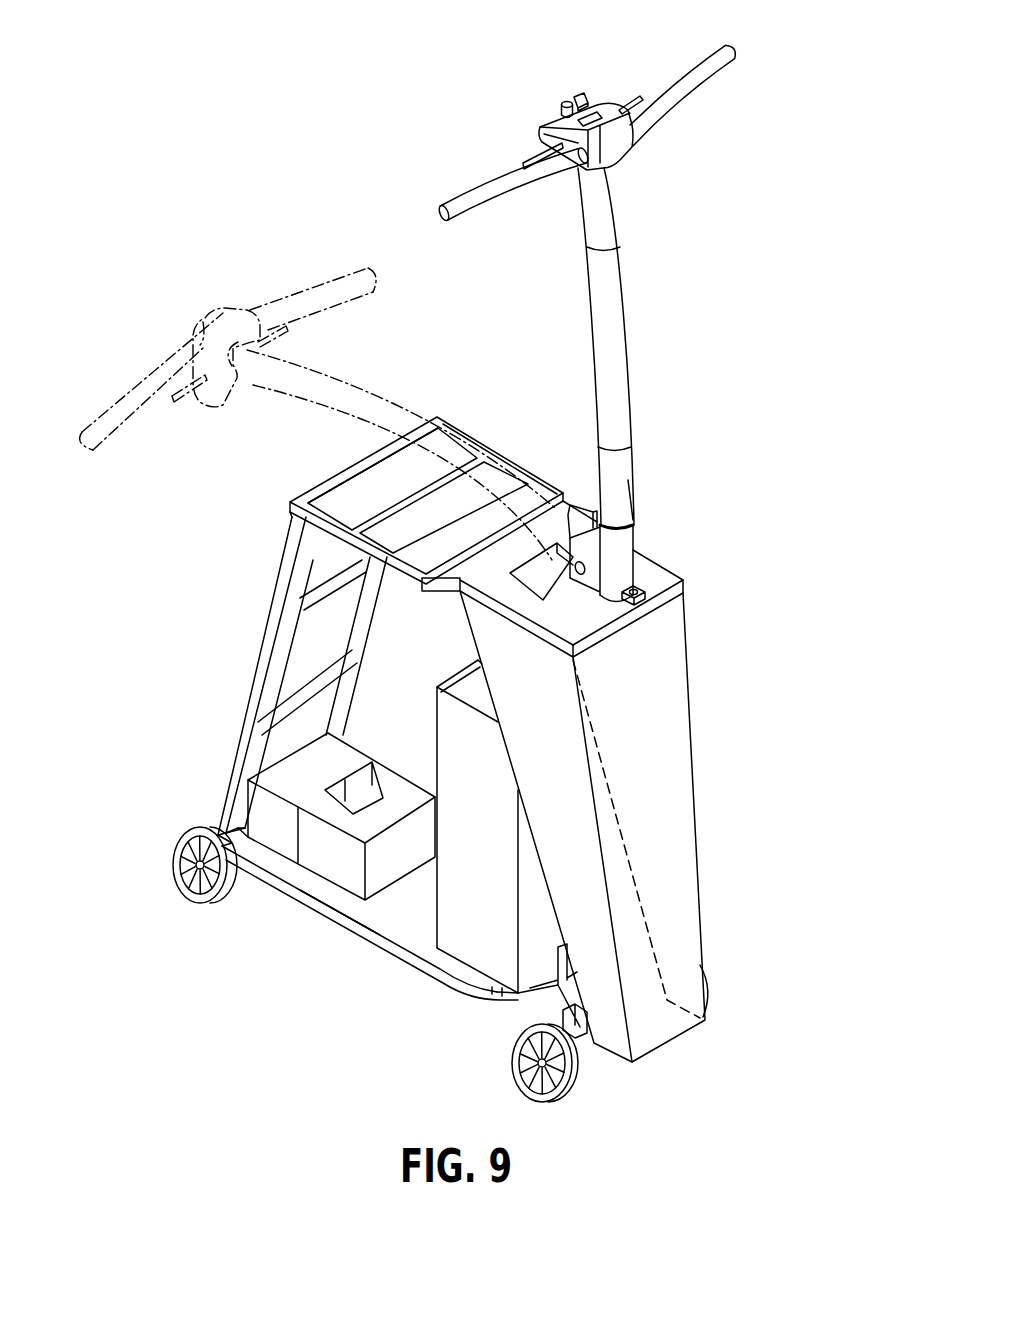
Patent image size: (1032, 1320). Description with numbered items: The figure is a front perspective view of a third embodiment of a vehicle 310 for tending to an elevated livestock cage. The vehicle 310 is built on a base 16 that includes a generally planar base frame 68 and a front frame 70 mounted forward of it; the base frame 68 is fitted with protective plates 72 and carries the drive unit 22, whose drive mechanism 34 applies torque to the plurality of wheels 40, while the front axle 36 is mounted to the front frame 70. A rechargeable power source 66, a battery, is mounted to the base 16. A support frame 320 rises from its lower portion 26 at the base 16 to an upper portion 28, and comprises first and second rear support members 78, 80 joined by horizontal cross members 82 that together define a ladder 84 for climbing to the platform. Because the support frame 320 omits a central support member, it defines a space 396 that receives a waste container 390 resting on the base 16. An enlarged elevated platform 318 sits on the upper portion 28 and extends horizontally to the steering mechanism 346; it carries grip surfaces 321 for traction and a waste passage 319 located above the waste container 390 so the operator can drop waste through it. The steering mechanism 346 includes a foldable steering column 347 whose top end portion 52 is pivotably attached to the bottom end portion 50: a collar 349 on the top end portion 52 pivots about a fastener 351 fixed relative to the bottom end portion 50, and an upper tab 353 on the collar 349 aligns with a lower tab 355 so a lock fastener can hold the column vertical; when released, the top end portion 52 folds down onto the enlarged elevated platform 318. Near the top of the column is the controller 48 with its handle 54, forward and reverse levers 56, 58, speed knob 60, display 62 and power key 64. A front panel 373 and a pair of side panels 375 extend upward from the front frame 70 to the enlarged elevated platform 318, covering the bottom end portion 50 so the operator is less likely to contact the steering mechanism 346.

The vehicle 310 is at (833, 130).
The handle 54 is at (703, 66).
The controller 48 is at (642, 155).
The top end portion 52 is at (615, 188).
The forward lever 56 is at (538, 152).
The reverse lever 58 is at (626, 100).
The speed knob 60 is at (566, 101).
The display 62 is at (594, 112).
The power key 64 is at (581, 94).
The steering mechanism 346 is at (650, 463).
The foldable steering column 347 is at (639, 497).
The collar 349 is at (639, 540).
The upper tab 353 is at (650, 590).
The lower tab 355 is at (650, 607).
The fastener 351 is at (577, 573).
The bottom end portion 50 is at (600, 606).
The waste passage 319 is at (550, 553).
The grip surfaces 321 is at (525, 495).
The enlarged elevated platform 318 is at (318, 497).
The upper portion 28 is at (280, 543).
The support frame 320 is at (234, 611).
The horizontal cross members 82 is at (318, 586).
The second rear support member 80 is at (392, 612).
The ladder 84 is at (252, 650).
The first rear support member 78 is at (262, 703).
The space 396 is at (454, 660).
The protective plates 72 is at (311, 746).
The drive mechanism 34 is at (268, 775).
The drive unit 22 is at (247, 790).
The lower portion 26 is at (210, 800).
The power source 66 is at (346, 865).
The wheels 40 is at (233, 906).
The base 16 is at (368, 946).
The base frame 68 is at (450, 979).
The waste container 390 is at (483, 972).
The front frame 70 is at (562, 1006).
The front axle 36 is at (579, 1034).
The side panels 375 is at (578, 797).
The front panel 373 is at (664, 797).